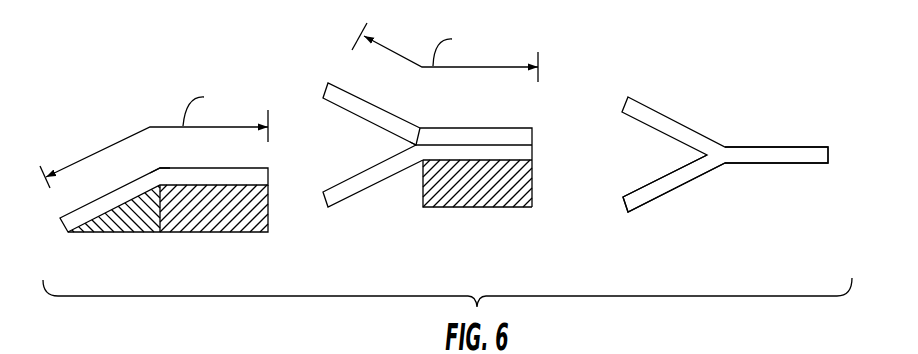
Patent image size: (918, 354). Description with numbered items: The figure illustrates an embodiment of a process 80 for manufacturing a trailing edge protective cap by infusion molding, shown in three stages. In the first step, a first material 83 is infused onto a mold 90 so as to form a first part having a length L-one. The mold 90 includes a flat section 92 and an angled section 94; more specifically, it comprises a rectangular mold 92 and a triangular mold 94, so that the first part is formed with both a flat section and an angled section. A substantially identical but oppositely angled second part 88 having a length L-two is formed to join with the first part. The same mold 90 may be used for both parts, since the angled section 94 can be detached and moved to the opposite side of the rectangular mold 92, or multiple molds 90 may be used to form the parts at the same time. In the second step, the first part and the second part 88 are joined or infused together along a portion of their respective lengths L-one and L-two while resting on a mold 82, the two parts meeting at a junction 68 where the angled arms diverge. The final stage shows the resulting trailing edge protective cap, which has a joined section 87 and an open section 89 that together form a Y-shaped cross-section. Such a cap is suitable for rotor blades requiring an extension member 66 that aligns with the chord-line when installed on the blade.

The extension member 66 is at (483, 127).
The junction / bend point 68 is at (418, 139).
The process 80 is at (107, 111).
The first mold 82 is at (516, 209).
The first material 83 is at (80, 213).
The joined section 87 is at (747, 157).
The second part 88 is at (360, 107).
The open section 89 is at (631, 171).
The mold 90 is at (247, 236).
The flat section 92 is at (192, 221).
The angled section 94 is at (127, 230).